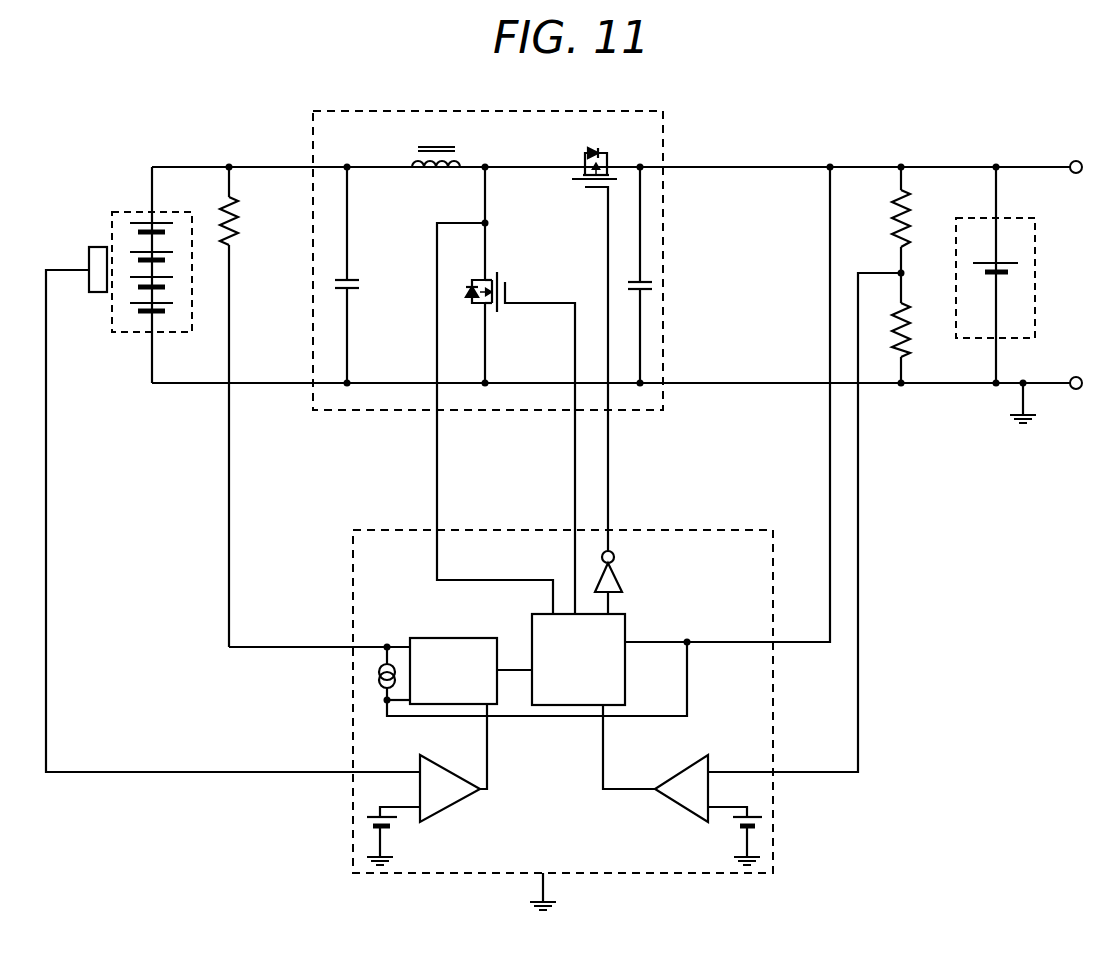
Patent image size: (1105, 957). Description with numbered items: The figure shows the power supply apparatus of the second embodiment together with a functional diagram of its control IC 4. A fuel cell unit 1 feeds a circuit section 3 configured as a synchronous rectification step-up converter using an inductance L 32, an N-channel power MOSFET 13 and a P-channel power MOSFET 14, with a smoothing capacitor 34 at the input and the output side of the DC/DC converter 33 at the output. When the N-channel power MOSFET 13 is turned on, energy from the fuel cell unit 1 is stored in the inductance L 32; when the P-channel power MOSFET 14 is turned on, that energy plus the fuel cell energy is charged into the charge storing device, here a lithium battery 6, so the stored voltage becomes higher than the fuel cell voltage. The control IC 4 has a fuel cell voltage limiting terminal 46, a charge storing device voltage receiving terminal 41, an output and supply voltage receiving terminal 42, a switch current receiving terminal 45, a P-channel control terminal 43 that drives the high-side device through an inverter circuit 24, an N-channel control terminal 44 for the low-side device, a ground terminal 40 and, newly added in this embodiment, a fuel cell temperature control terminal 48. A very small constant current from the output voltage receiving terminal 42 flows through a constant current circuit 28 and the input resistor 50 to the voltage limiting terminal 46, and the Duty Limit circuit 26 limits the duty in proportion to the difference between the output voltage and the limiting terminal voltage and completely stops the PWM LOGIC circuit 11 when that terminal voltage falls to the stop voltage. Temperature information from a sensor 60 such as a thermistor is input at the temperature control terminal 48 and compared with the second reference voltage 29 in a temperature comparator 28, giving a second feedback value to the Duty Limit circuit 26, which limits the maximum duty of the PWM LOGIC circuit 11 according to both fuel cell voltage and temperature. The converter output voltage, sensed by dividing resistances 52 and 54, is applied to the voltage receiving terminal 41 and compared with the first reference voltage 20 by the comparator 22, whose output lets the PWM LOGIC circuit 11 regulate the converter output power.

The fuel cell unit 1 is at (132, 210).
The circuit section 3 is at (313, 116).
The control IC 4 is at (774, 841).
The lithium battery 6 is at (1035, 245).
The PWM LOGIC circuit 11 is at (625, 622).
The N-channel power MOSFET 13 is at (487, 269).
The P-channel power MOSFET 14 is at (597, 155).
The reference voltage 20 is at (708, 847).
The comparator 22 is at (708, 756).
The inverter circuit 24 is at (620, 585).
The Duty Limit circuit 26 is at (422, 635).
The constant current circuit / comparator 28 is at (378, 684).
The reference voltage Vref2 29 is at (466, 834).
The inductance L 32 is at (432, 149).
The DC/DC converter (output capacitor) 33 is at (655, 283).
The smoothing capacitor 34 is at (358, 284).
The GND terminal 40 is at (570, 889).
The FBout terminal 41 is at (801, 751).
The Vout terminal 42 is at (793, 614).
The TG terminal 43 is at (612, 480).
The BG terminal 44 is at (572, 483).
The SENSE terminal 45 is at (440, 482).
The Vlim terminal 46 is at (266, 647).
The TEMP terminal 48 is at (246, 770).
The Rin 50 is at (240, 218).
The dividing resistance 52 is at (905, 221).
The dividing resistance 54 is at (905, 345).
The sensor 60 is at (96, 250).